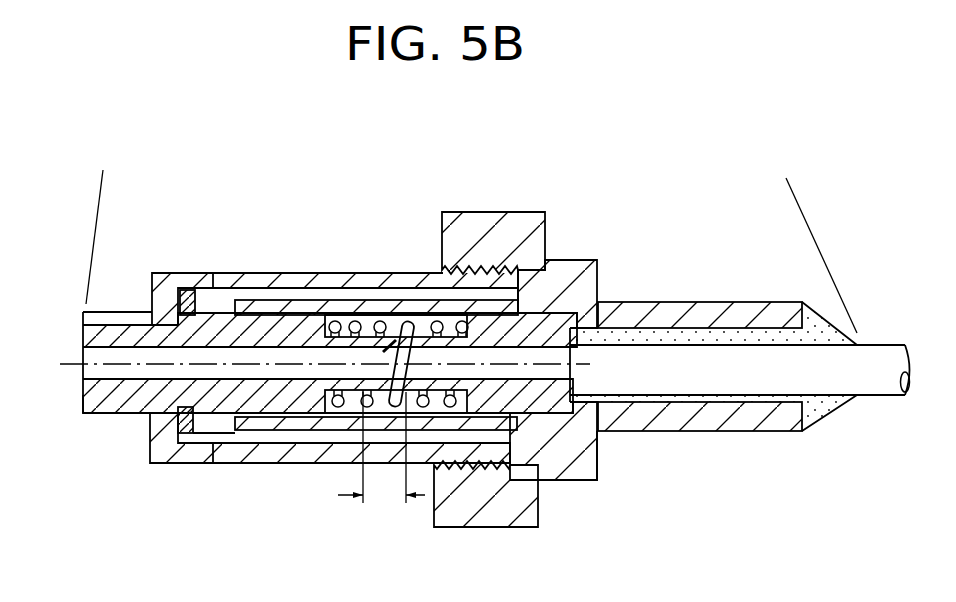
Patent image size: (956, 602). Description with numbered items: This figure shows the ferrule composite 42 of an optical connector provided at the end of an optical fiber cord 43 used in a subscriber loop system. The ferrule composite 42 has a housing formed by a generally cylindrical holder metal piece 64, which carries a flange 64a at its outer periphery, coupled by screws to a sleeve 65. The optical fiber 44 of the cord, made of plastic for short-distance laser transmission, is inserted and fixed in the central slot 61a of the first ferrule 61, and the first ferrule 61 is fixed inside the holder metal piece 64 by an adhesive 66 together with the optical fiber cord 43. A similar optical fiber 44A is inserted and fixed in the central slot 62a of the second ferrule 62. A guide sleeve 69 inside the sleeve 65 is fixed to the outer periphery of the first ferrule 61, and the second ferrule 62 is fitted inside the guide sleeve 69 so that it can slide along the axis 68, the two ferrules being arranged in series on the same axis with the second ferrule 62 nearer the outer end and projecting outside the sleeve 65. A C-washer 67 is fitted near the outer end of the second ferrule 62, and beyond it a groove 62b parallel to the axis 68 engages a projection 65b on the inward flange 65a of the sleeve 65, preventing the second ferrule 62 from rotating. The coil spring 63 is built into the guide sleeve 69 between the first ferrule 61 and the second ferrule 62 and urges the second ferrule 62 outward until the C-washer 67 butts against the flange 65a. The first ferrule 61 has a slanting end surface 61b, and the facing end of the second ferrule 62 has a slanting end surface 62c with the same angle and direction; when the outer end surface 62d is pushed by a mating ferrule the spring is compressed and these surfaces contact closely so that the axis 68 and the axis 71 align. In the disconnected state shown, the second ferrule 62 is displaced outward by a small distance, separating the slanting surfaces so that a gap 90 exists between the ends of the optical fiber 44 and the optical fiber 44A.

The ferrule composite 42 is at (655, 213).
The optical fiber cord 43 is at (873, 388).
The optical fiber 44 is at (522, 382).
The optical fiber 44A is at (127, 372).
The first ferrule 61 is at (548, 303).
The central slot 61a is at (522, 376).
The slanting end surface 61b is at (420, 315).
The second ferrule 62 is at (210, 428).
The central slot 62a is at (224, 375).
The groove 62b is at (102, 316).
The slanting end surface 62c is at (392, 340).
The end surface 62d is at (83, 398).
The coil spring 63 is at (380, 337).
The holder metal piece 64 is at (717, 304).
The flange 64a is at (512, 212).
The sleeve 65 is at (270, 463).
The flange 65a is at (163, 430).
The projection 65b is at (152, 296).
The adhesive 66 is at (857, 337).
The C-washer 67 is at (212, 272).
The axis 68 is at (62, 366).
The guide sleeve 69 is at (280, 273).
The axis 71 is at (595, 437).
The gap 90 is at (405, 462).